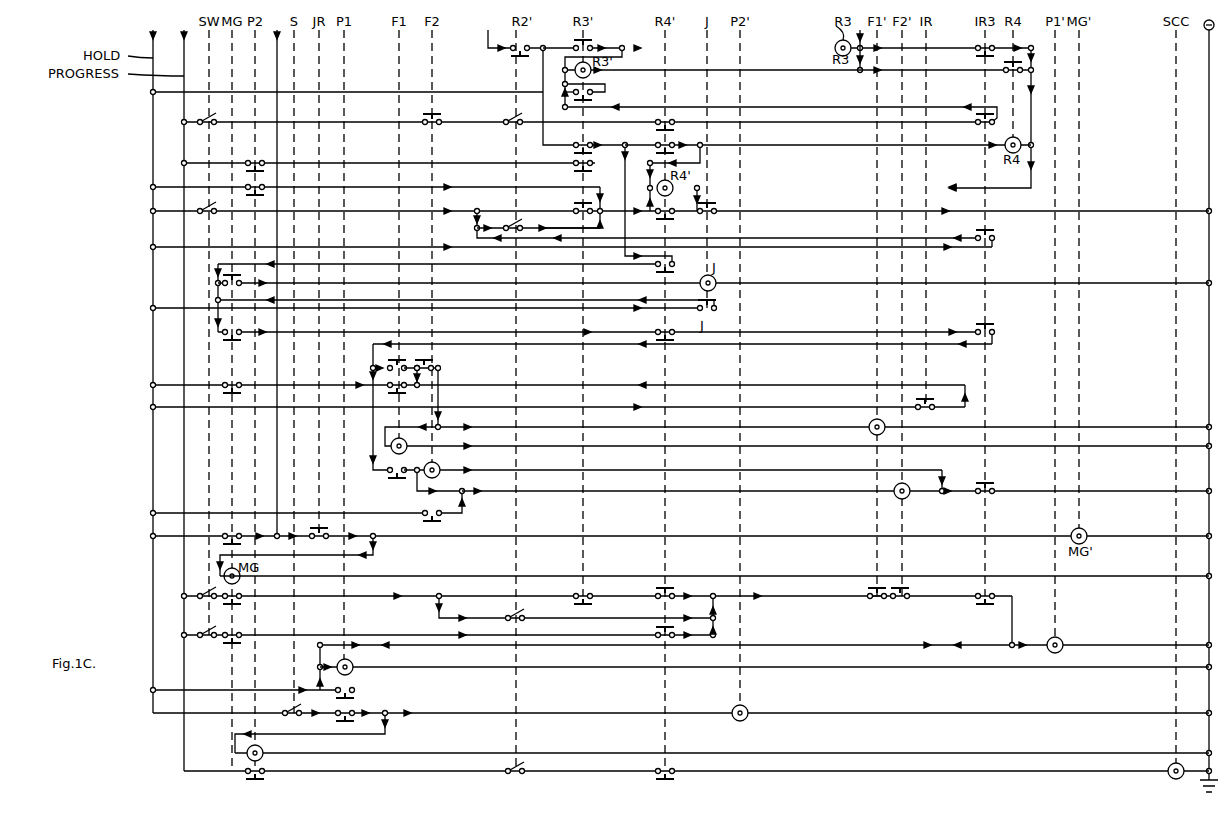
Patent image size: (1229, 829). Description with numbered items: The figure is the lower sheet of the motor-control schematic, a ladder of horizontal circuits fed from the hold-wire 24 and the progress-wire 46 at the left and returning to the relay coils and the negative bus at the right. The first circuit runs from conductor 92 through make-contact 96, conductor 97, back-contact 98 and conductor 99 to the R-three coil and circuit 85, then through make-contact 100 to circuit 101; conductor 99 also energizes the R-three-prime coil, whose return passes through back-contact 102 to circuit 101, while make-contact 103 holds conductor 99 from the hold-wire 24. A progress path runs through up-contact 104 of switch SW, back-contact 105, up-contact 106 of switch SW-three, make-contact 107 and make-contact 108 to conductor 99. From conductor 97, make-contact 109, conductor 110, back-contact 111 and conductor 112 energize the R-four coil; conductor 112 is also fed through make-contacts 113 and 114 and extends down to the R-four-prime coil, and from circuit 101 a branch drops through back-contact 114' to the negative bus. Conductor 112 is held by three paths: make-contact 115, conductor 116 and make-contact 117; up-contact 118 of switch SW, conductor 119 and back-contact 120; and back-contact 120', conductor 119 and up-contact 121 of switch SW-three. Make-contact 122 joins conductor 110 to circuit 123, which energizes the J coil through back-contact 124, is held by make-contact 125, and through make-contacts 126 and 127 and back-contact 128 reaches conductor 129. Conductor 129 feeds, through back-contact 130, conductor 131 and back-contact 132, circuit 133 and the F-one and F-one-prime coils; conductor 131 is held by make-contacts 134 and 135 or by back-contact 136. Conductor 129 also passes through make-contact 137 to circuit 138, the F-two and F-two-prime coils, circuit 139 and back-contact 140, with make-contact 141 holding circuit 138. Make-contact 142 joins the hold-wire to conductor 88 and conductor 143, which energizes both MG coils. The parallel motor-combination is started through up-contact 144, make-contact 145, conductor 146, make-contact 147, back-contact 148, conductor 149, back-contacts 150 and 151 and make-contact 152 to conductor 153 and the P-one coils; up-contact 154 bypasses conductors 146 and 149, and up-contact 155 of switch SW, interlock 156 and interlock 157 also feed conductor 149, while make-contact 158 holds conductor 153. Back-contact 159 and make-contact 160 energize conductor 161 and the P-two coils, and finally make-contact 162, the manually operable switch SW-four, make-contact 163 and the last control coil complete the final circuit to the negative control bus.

The hold-wire 24 is at (669, 367).
The progress-wire 46 is at (685, 396).
The circuit 85 is at (866, 50).
The conductor 88 is at (278, 284).
The conductor 92 is at (492, 32).
The R2' make-contact 96 is at (520, 55).
The conductor 97 is at (548, 90).
The R3' back-contact 98 is at (582, 39).
The conductor 99 is at (780, 75).
The IR3 make-contact 100 is at (937, 54).
The circuit 101 is at (1004, 117).
The R4 back-contact 102 is at (937, 74).
The R3' make-contact 103 is at (592, 92).
The normally closed up-contact of switch SW 104 is at (214, 129).
The F2 back-contact 105 is at (440, 114).
The normally closed up-contact of switch SW3 106 is at (506, 120).
The R4 make-contact 107 is at (676, 116).
The IR3 make-contact 108 is at (971, 126).
The R3' make-contact 109 is at (600, 140).
The conductor 110 is at (650, 196).
The R4' back-contact 111 is at (662, 140).
The conductor 112 is at (825, 169).
The P2 make-contact 113 is at (261, 158).
The R3' make-contact 114 is at (570, 169).
The J-switch back-contact 114' is at (717, 200).
The P2 make-contact 115 is at (261, 197).
The conductor 116 is at (590, 207).
The R4' make-contact 117 is at (653, 218).
The normally closed up-contact of switch SW 118 is at (201, 215).
The conductor 119 is at (855, 240).
The R3' back-contact 120 is at (572, 203).
The IR3 back-contact 120' is at (997, 233).
The normally open up-contact of switch SW3 121 is at (538, 220).
The R4' make-contact 122 is at (650, 272).
The circuit 123 is at (540, 256).
The MG back-contact 124 is at (713, 275).
The J make-contact 125 is at (693, 312).
The MG make-contact 126 is at (598, 327).
The R4' make-contact 127 is at (653, 327).
The IR3 back-contact 128 is at (975, 329).
The conductor 129 is at (682, 407).
The F1 back-contact 130 is at (390, 358).
The conductor 131 is at (692, 384).
The F2 back-contact 132 is at (444, 386).
The circuit 133 is at (791, 432).
The MG make-contact 134 is at (224, 379).
The F1 make-contact 135 is at (389, 395).
The IR back-contact 136 is at (941, 406).
The F1 make-contact 137 is at (381, 479).
The circuit 138 is at (671, 483).
The circuit 139 is at (835, 488).
The IR3 back-contact 140 is at (995, 483).
The F2 make-contact 141 is at (429, 518).
The MG make-contact 142 is at (281, 536).
The conductor 143 is at (299, 547).
The normally closed up-contact of switch SW 144 is at (201, 587).
The MG make-contact 145 is at (243, 605).
The conductor 146 is at (561, 601).
The R3' make-contact 147 is at (592, 596).
The R4' back-contact 148 is at (655, 588).
The conductor 149 is at (721, 610).
The F1' back-contact 150 is at (863, 596).
The F2' back-contact 151 is at (912, 596).
The IR3 make-contact 152 is at (976, 599).
The conductor 153 is at (749, 639).
The normally open up-contact of switch SW3 154 is at (506, 617).
The switch SW contact 155 is at (201, 634).
The MG-in interlock 156 is at (242, 635).
The R4'-out interlock 157 is at (650, 628).
The P1 make-contact 158 is at (764, 673).
The S-switch back-contact 159 is at (282, 712).
The P1 make-contact 160 is at (340, 713).
The conductor 161 is at (310, 727).
The P2 make-contact 162 is at (713, 750).
The R4' make-contact 163 is at (842, 774).